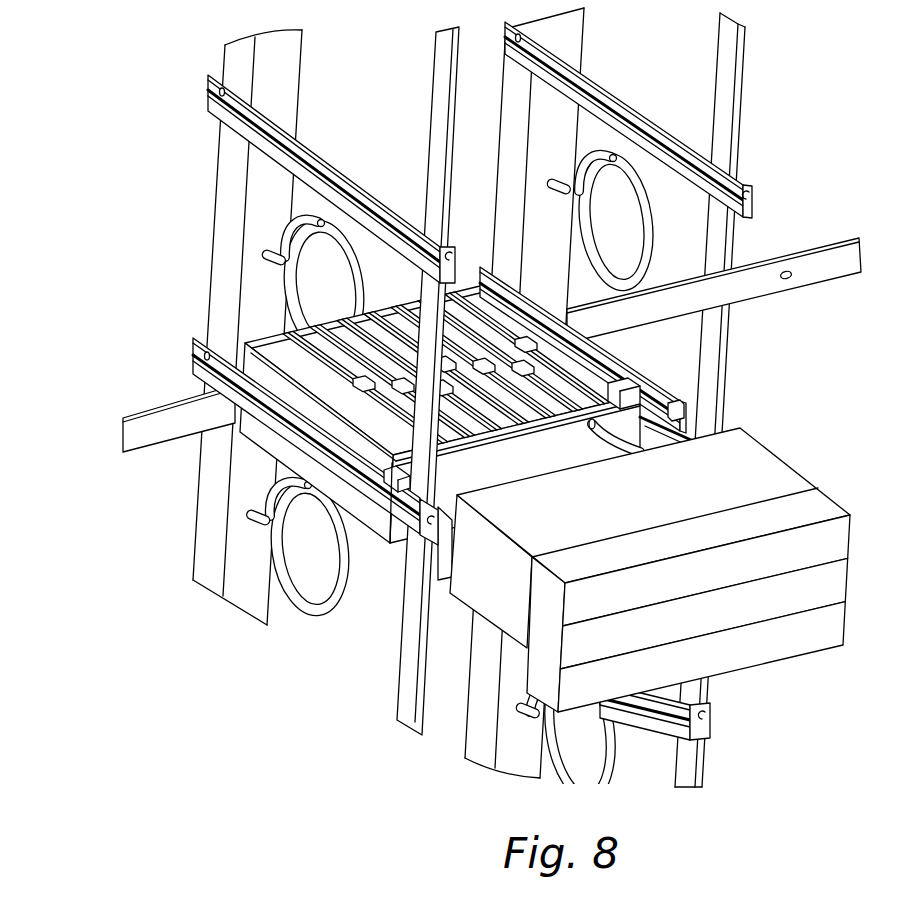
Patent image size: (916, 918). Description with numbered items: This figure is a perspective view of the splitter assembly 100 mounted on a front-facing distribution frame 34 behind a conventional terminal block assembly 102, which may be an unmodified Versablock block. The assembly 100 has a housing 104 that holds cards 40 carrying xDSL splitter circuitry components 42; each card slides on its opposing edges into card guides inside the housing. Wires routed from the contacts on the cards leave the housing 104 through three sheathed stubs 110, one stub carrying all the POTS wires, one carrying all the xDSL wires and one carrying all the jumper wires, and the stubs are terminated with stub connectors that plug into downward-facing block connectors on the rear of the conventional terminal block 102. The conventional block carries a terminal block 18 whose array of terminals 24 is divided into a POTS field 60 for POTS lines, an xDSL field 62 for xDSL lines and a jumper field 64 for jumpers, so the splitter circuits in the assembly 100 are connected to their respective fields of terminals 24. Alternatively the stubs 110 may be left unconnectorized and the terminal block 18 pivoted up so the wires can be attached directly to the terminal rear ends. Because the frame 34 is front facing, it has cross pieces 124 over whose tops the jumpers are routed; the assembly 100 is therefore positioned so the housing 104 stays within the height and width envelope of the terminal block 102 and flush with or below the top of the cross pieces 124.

The terminal block 18 is at (540, 677).
The electronic equipment stack 24 is at (628, 613).
The distribution frame 34 is at (726, 320).
The card 40 is at (473, 330).
The xDSL splitter circuitry components 42 is at (510, 357).
The POTS field 60 is at (706, 570).
The xDSL field 62 is at (703, 613).
The jumper field 64 is at (701, 657).
The assembly 100 is at (600, 340).
The conventional terminal block assembly 102 is at (772, 676).
The housing 104 is at (663, 383).
The stubs 110 is at (679, 405).
The cross pieces 124 is at (495, 267).